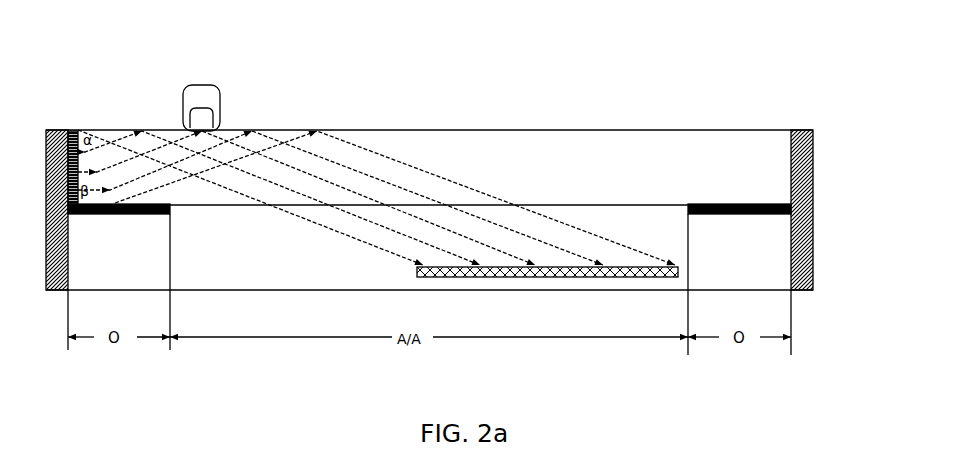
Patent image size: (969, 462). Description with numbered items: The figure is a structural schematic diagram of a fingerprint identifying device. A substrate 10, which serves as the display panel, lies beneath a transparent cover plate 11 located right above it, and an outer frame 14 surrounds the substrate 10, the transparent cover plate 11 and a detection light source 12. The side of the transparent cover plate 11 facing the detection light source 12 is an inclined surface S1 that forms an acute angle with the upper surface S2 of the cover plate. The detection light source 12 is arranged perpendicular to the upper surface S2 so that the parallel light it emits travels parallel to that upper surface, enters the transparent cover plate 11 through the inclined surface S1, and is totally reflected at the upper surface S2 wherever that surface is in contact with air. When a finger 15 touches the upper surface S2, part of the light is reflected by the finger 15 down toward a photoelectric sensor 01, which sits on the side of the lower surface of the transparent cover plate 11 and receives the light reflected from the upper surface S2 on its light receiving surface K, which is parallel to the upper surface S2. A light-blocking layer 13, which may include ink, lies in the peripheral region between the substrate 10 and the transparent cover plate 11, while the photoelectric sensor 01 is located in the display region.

The substrate 10 is at (429, 306).
The transparent cover plate 11 is at (429, 144).
The detection light source 12 is at (72, 130).
The light-blocking layer 13 is at (446, 130).
The outer frame 14 is at (458, 186).
The finger 15 is at (210, 110).
The photoelectric sensor 01 is at (582, 171).
The light receiving surface K is at (681, 223).
The inclined surface S1 is at (136, 155).
The upper surface S2 is at (463, 114).